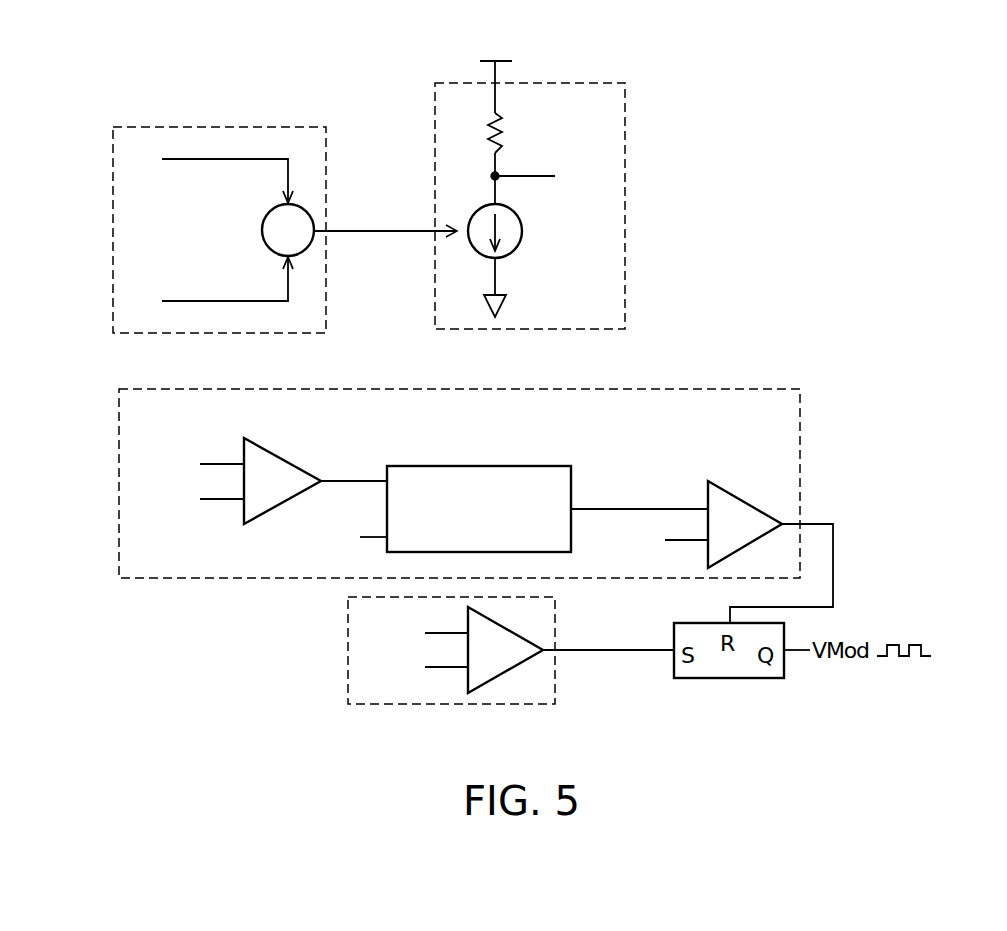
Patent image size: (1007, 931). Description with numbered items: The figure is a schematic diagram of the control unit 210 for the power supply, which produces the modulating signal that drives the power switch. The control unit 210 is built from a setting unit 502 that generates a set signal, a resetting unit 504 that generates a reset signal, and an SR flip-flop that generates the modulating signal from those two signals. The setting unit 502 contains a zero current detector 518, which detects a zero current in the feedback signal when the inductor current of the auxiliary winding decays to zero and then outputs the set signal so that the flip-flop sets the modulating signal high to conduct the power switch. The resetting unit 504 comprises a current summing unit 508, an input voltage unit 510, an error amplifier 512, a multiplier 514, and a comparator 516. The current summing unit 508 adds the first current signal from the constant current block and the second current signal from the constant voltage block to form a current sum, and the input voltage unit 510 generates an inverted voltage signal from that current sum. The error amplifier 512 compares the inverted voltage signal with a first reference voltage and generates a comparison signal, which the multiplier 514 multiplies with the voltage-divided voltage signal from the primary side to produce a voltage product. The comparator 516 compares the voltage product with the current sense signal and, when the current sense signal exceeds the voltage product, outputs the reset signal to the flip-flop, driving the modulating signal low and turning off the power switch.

The control unit 210 is at (877, 158).
The current summing unit 508 is at (228, 127).
The input voltage unit 510 is at (588, 83).
The resetting unit 504 is at (735, 389).
The error amplifier 512 is at (291, 466).
The multiplier 514 is at (476, 466).
The comparator 516 is at (741, 499).
The setting unit 502 is at (348, 633).
The zero current detector 518 is at (498, 679).